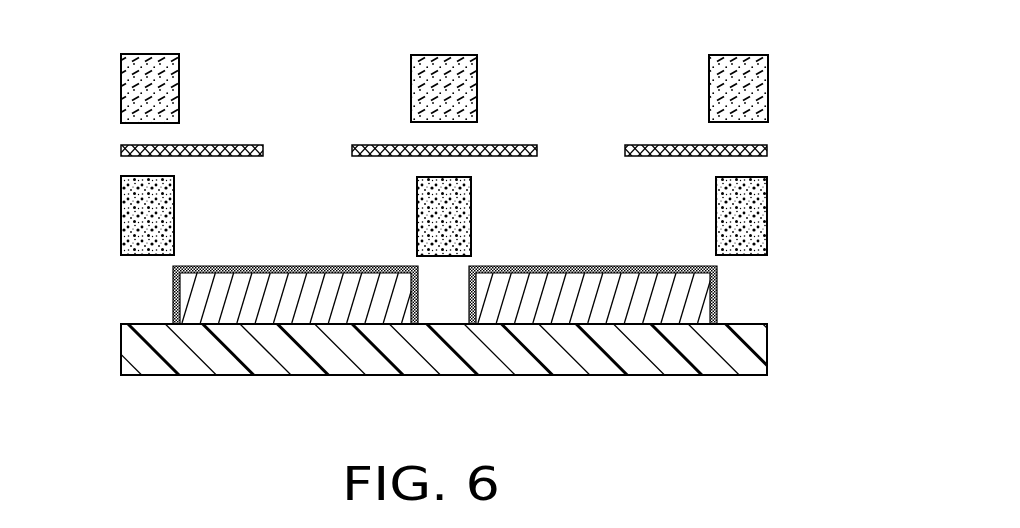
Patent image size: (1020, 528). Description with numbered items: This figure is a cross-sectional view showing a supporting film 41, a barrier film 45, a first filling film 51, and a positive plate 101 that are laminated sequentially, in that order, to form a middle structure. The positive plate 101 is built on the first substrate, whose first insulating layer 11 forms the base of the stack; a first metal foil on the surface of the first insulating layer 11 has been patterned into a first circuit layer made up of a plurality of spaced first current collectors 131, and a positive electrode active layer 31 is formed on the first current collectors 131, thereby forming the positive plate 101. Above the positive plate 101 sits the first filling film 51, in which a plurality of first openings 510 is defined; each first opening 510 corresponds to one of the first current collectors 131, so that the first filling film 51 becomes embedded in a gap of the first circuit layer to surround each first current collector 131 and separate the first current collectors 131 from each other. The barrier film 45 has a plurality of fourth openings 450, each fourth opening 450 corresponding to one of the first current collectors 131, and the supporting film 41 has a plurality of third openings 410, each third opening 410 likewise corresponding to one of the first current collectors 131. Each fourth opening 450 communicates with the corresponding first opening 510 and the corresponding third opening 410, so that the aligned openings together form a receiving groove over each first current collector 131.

The third opening 410 is at (478, 69).
The supporting film 41 is at (763, 88).
The fourth opening 450 is at (480, 125).
The barrier film 45 is at (762, 148).
The first opening 510 is at (435, 235).
The first filling film 51 is at (752, 205).
The positive electrode active layer 31 is at (717, 278).
The first current collector 131 is at (698, 302).
The first insulating layer 11 is at (439, 347).
The positive plate 101 is at (468, 314).